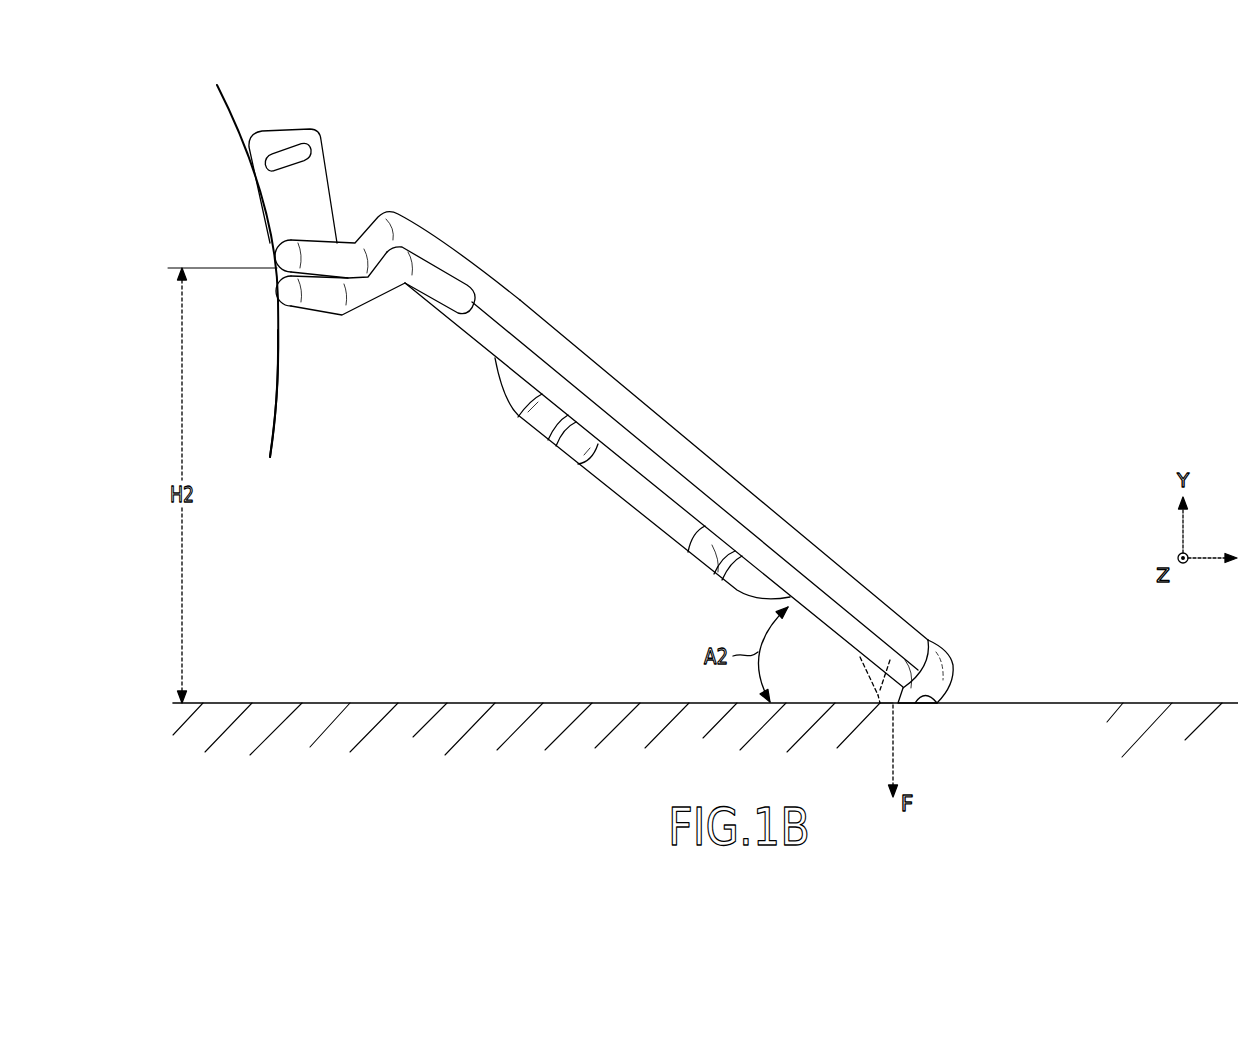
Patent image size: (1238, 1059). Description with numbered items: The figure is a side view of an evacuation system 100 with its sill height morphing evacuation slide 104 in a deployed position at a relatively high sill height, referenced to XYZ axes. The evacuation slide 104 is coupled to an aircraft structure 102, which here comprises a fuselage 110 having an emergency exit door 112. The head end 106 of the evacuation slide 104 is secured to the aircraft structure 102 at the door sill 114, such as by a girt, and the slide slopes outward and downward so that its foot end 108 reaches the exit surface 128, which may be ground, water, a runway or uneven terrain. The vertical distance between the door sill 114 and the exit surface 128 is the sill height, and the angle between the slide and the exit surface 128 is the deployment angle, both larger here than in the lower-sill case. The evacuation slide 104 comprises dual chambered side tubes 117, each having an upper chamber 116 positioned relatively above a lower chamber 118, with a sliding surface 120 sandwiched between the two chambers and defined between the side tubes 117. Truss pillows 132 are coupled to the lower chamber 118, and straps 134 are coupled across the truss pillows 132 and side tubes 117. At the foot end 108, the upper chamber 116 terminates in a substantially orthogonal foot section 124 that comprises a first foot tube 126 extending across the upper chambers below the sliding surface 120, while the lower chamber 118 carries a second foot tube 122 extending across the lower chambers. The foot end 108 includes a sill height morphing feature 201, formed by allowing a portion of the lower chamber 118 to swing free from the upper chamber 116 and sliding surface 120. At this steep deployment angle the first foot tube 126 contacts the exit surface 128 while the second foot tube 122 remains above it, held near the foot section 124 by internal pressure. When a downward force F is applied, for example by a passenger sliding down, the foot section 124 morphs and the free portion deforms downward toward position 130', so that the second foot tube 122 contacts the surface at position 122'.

The evacuation system 100 is at (786, 211).
The aircraft structure 102 is at (218, 382).
The evacuation slide 104 is at (658, 328).
The head end 106 is at (292, 318).
The foot end 108 is at (897, 534).
The fuselage 110 is at (275, 428).
The emergency exit door 112 is at (303, 137).
The door sill 114 is at (272, 253).
The upper chamber 116 is at (488, 280).
The side tubes 117 is at (546, 322).
The lower chamber 118 is at (477, 334).
The sliding surface 120 is at (628, 425).
The second foot tube 122 is at (944, 640).
The position of second foot tube 122' is at (867, 739).
The foot section 124 is at (952, 648).
The first foot tube 126 is at (925, 692).
The exit surface 128 is at (360, 702).
The position of lower chamber portion 130' is at (843, 677).
The truss pillows 132 is at (578, 456).
The straps 134 is at (544, 437).
The sill height morphing feature 201 is at (987, 624).